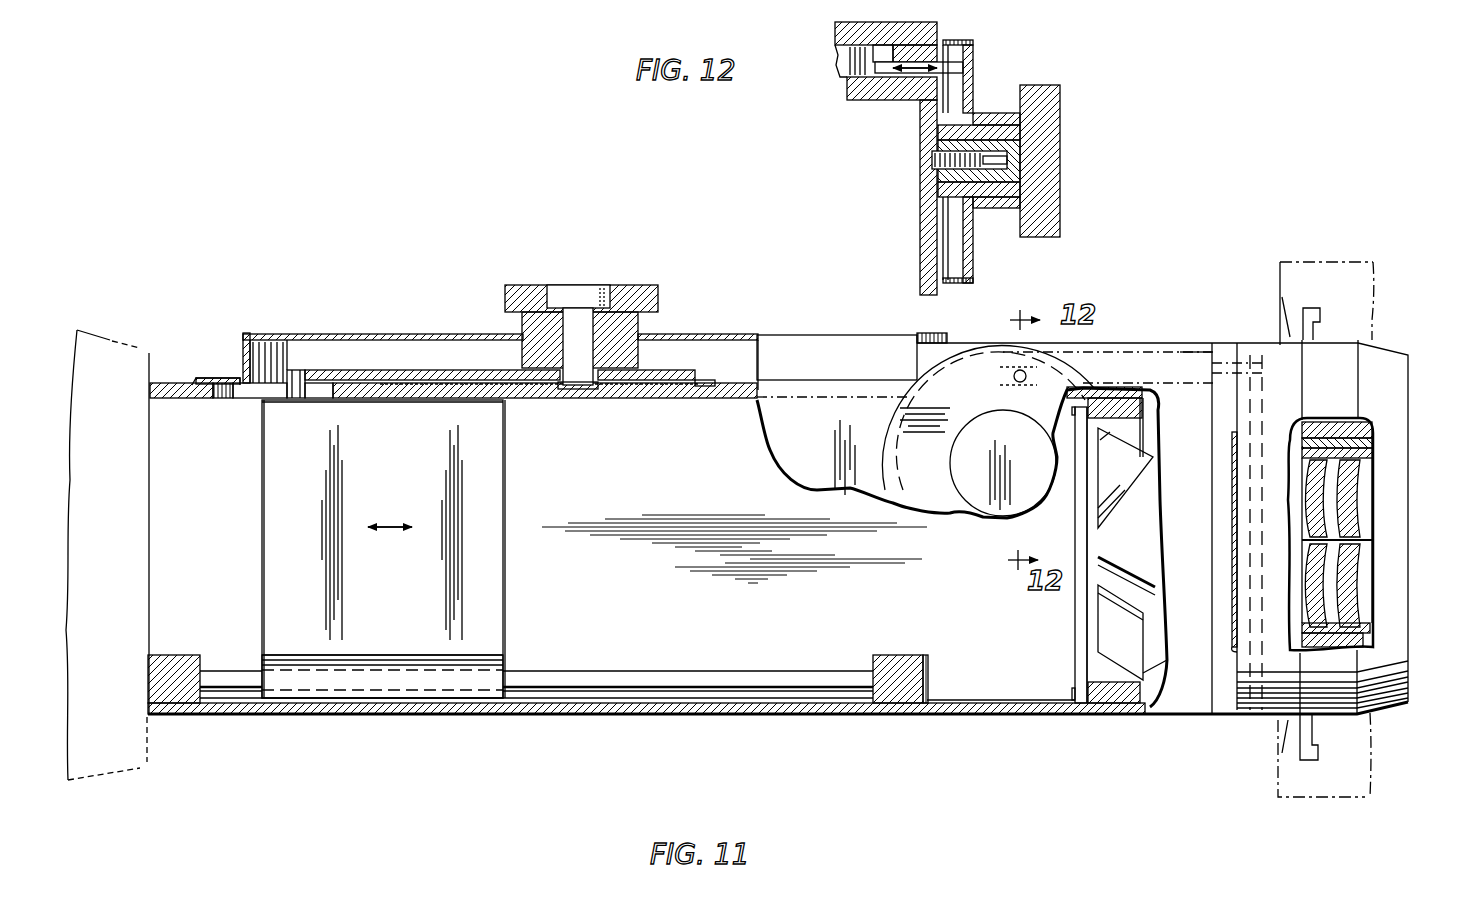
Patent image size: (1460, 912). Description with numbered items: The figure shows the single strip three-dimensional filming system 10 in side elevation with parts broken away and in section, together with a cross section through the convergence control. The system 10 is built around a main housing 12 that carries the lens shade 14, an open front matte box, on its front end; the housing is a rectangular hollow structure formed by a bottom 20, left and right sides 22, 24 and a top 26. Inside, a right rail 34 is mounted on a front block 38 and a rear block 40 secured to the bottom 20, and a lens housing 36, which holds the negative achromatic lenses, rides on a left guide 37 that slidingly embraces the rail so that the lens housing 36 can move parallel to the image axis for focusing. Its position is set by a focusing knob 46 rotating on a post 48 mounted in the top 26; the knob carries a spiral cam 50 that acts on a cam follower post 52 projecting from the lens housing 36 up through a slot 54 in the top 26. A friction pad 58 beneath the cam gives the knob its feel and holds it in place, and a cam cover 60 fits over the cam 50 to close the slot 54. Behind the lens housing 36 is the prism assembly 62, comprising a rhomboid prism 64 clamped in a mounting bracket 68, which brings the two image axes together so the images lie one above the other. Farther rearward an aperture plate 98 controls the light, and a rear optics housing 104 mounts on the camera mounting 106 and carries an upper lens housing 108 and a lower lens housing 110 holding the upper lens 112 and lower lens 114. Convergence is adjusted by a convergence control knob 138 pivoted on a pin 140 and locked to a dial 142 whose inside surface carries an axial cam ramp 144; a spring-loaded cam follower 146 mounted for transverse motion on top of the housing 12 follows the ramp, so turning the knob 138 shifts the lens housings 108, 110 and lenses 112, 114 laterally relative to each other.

In FIG. 11, the system 10 is at (452, 232).
In FIG. 11, the main housing 12 is at (700, 718).
In FIG. 11, the lens shade 14 is at (118, 340).
In FIG. 11, the bottom 20 is at (562, 713).
In FIG. 11, the left side 22 is at (805, 433).
In FIG. 11, the right side 24 is at (997, 667).
In FIG. 11, the top 26 is at (347, 385).
In FIG. 11, the right rail 34 is at (742, 683).
In FIG. 11, the lens housing 36 is at (373, 638).
In FIG. 11, the left guide 37 is at (455, 688).
In FIG. 11, the front block 38 is at (180, 688).
In FIG. 11, the rear block 40 is at (902, 692).
In FIG. 11, the focusing knob 46 is at (658, 287).
In FIG. 11, the post 48 is at (575, 330).
In FIG. 11, the spiral cam 50 is at (670, 373).
In FIG. 11, the cam follower post 52 is at (293, 368).
In FIG. 11, the slot 54 is at (232, 390).
In FIG. 11, the friction pad 58 is at (710, 378).
In FIG. 11, the cam cover 60 is at (405, 333).
In FIG. 11, the prism assembly 62 is at (1118, 642).
In FIG. 11, the left rhomboid prism 64 is at (1132, 562).
In FIG. 11, the mounting bracket 68 is at (1087, 630).
In FIG. 11, the aperture plate 98 is at (1232, 463).
In FIG. 11, the rear optics housing 104 is at (1275, 693).
In FIG. 11, the camera mounting 106 is at (1293, 262).
In FIG. 11, the upper lens housing 108 is at (1367, 458).
In FIG. 11, the lower lens housing 110 is at (1362, 623).
In FIG. 11, the upper lens 112 is at (1350, 510).
In FIG. 11, the lower lens 114 is at (1352, 575).
In FIG. 12, the convergence control knob 138 is at (1060, 132).
In FIG. 11, the convergence control knob 138 is at (970, 498).
In FIG. 12, the pin 140 is at (1030, 158).
In FIG. 12, the dial 142 is at (977, 277).
In FIG. 11, the dial 142 is at (1080, 370).
In FIG. 12, the axial cam ramp 144 is at (953, 93).
In FIG. 12, the cam follower 146 is at (863, 68).
In FIG. 11, the cam follower 146 is at (997, 352).